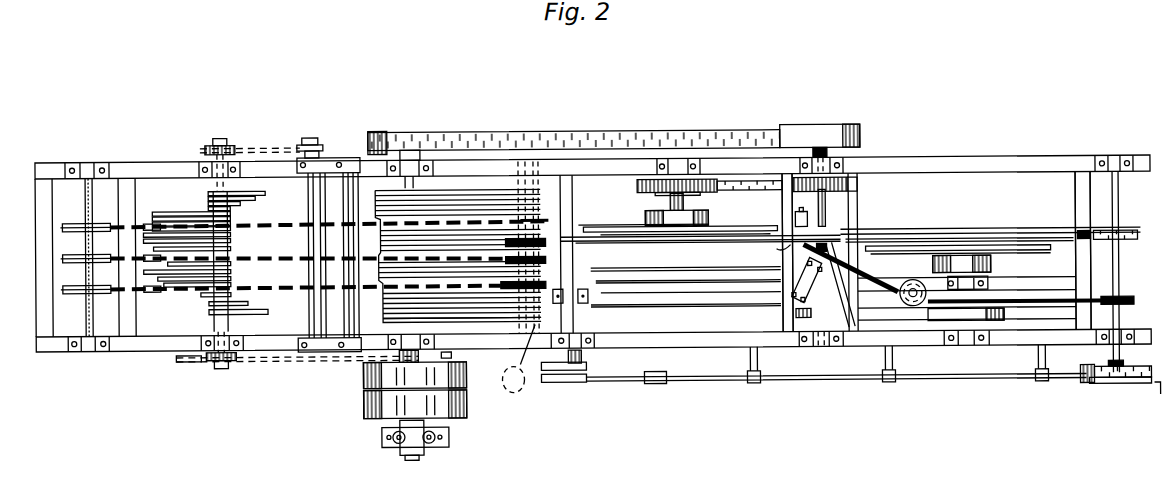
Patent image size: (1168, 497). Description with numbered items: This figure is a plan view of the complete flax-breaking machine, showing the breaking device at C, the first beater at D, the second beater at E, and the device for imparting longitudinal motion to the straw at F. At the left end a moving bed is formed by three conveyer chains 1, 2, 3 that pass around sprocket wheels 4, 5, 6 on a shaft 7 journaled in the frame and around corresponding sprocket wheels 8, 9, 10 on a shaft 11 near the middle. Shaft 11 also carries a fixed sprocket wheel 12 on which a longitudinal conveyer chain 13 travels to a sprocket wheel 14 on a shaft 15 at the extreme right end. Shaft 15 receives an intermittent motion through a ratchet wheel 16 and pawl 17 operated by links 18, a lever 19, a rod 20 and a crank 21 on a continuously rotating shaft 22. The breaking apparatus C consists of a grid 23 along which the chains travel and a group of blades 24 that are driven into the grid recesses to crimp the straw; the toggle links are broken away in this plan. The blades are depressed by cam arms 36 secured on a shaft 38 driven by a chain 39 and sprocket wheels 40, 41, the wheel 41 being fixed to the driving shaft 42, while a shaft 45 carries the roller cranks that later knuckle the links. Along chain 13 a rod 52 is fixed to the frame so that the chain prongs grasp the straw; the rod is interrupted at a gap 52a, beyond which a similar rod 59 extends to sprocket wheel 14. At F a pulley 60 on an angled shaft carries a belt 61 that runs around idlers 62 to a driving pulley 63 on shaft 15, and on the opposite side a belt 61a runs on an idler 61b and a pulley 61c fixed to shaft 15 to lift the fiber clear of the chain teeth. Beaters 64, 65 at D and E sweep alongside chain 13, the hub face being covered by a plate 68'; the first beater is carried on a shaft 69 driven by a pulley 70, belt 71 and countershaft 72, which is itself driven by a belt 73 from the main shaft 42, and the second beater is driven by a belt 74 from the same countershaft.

The conveyer chain 1 is at (62, 289).
The conveyer chain 2 is at (62, 258).
The conveyer chain 3 is at (62, 227).
The sprocket wheel 4 is at (87, 298).
The sprocket wheel 5 is at (87, 264).
The sprocket wheel 6 is at (86, 235).
The shaft 7 is at (92, 289).
The sprocket wheel 8 is at (539, 282).
The sprocket wheel 9 is at (538, 254).
The sprocket wheel 10 is at (540, 225).
The shaft 11 is at (518, 358).
The sprocket wheel 12 is at (532, 234).
The conveyer chain 13 is at (837, 243).
The sprocket wheel 14 is at (1150, 239).
The shaft 15 is at (1120, 270).
The ratchet wheel 16 is at (1135, 375).
The pawl 17 is at (1153, 398).
The links 18 is at (1102, 388).
The lever 19 is at (1087, 364).
The rod 20 is at (965, 374).
The crank 21 is at (580, 375).
The shaft 22 is at (585, 357).
The grid 23 is at (462, 308).
The blades 24 is at (458, 255).
The arm 36 is at (197, 220).
The shaft 38 is at (226, 146).
The chain 39 is at (291, 364).
The sprocket wheel 40 is at (188, 368).
The sprocket wheel 41 is at (450, 357).
The driving shaft 42 is at (408, 458).
The shaft 45 is at (315, 143).
The rod 52 is at (728, 247).
The gap 52a is at (772, 256).
The rod 59 is at (933, 245).
The pulley 60 is at (822, 256).
The belt 61 is at (878, 294).
The belt 61a is at (893, 236).
The idler 61b is at (795, 223).
The pulley 61c is at (1127, 235).
The idlers 62 is at (942, 289).
The driving pulley 63 is at (1140, 302).
The beater 64 is at (691, 218).
The beater 65 is at (990, 265).
The plate 68' is at (792, 228).
The shaft 69 is at (668, 203).
The pulley 70 is at (688, 183).
The belt 71 is at (787, 186).
The countershaft 72 is at (821, 222).
The belt 73 is at (556, 143).
The belt 74 is at (947, 313).
The breaking device C is at (397, 243).
The first beater D is at (679, 260).
The second beater E is at (958, 256).
The longitudinal motion device F is at (872, 271).